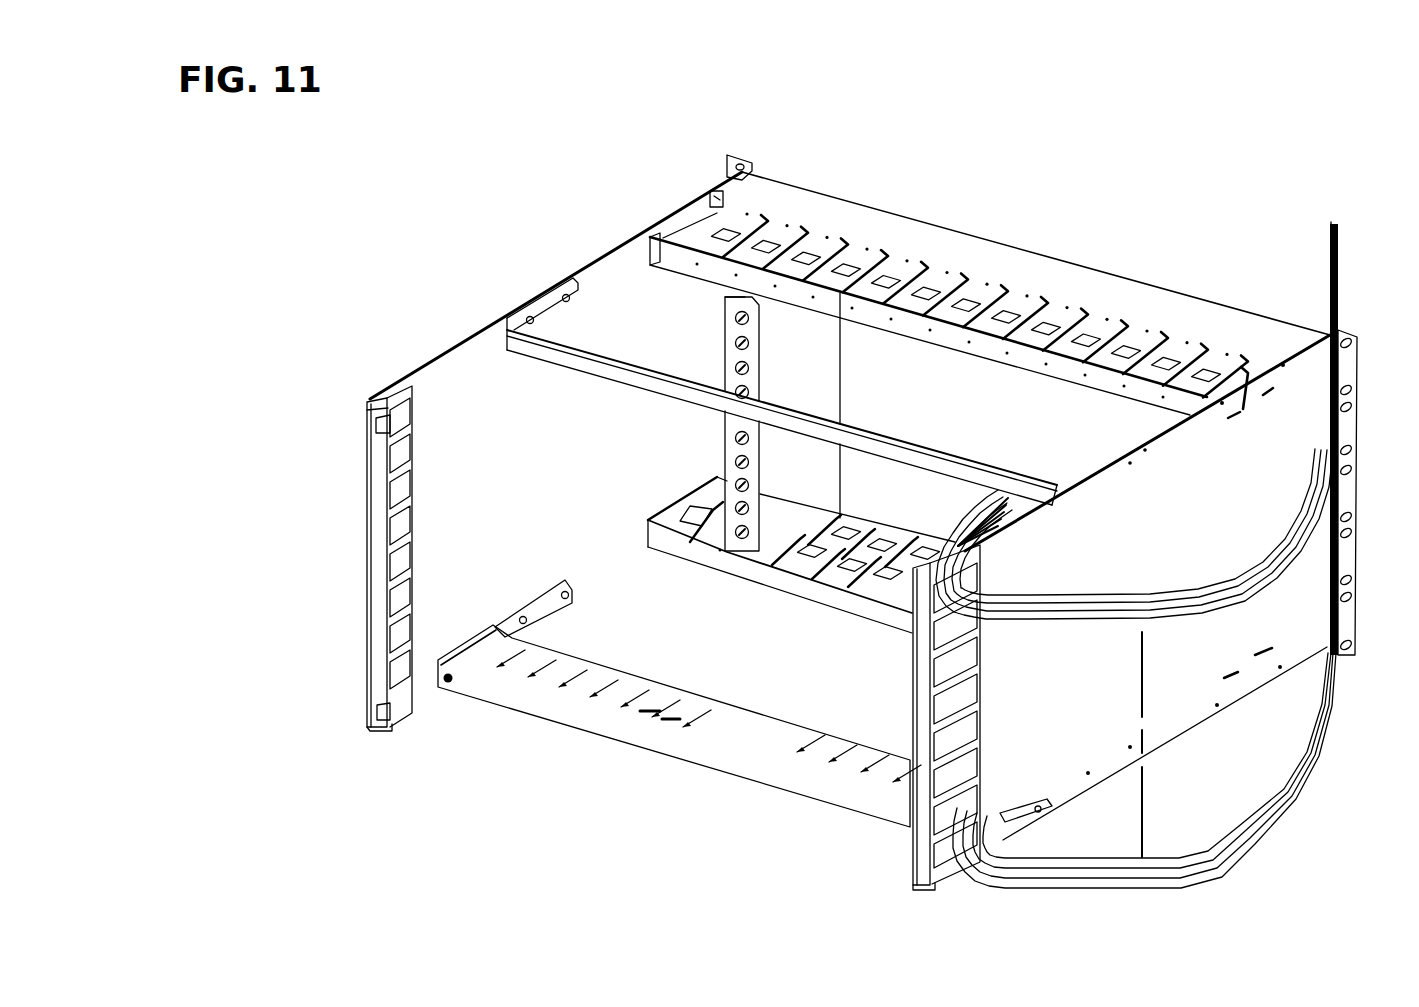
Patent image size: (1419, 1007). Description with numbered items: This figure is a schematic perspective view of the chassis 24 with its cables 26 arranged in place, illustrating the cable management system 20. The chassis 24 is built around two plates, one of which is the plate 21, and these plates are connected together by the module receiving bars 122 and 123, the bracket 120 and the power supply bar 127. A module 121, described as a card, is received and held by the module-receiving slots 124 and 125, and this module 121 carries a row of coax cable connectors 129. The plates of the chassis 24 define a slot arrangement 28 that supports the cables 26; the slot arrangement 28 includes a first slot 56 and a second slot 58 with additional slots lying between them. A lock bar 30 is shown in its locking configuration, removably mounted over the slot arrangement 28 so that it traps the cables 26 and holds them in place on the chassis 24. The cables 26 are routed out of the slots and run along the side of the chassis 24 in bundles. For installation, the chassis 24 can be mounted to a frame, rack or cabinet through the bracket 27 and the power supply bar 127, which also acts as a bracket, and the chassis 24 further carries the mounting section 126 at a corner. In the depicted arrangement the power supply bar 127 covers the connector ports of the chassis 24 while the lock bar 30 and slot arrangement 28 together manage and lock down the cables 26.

The cable management system 20 is at (1008, 686).
The plate 21 is at (428, 368).
The chassis 24 is at (992, 128).
The cable 26 is at (1340, 290).
The bracket 27 is at (1360, 526).
The slot arrangement 28 is at (340, 552).
The lock bar 30 is at (367, 622).
The first slot 56 is at (975, 568).
The second slot 58 is at (976, 822).
The bracket 120 is at (603, 370).
The module 121 is at (728, 333).
The module receiving bar 122 is at (878, 268).
The module receiving bar 123 is at (773, 592).
The module-receiving slot 124 is at (733, 290).
The module-receiving slot 125 is at (736, 557).
The mounting section 126 is at (740, 156).
The power supply bar 127 is at (520, 703).
The coax cable connector 129 is at (736, 440).